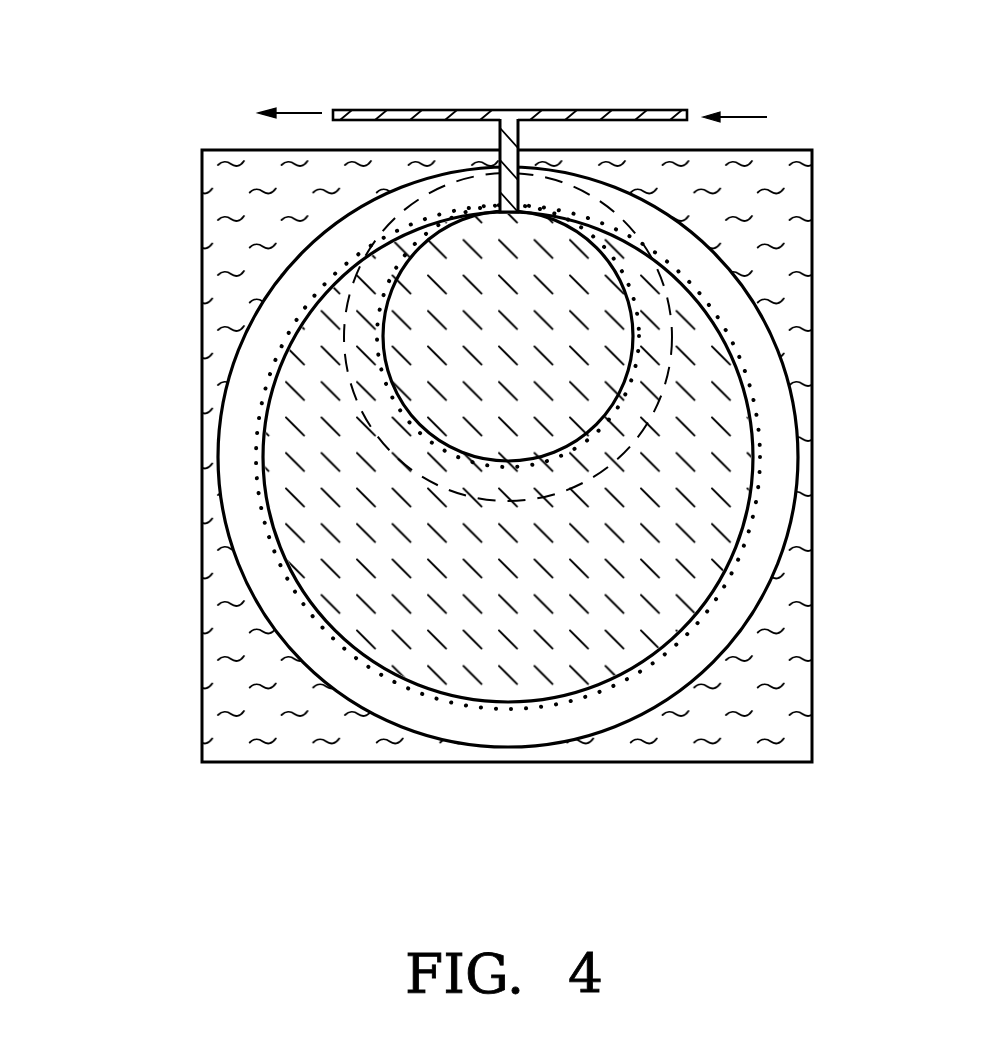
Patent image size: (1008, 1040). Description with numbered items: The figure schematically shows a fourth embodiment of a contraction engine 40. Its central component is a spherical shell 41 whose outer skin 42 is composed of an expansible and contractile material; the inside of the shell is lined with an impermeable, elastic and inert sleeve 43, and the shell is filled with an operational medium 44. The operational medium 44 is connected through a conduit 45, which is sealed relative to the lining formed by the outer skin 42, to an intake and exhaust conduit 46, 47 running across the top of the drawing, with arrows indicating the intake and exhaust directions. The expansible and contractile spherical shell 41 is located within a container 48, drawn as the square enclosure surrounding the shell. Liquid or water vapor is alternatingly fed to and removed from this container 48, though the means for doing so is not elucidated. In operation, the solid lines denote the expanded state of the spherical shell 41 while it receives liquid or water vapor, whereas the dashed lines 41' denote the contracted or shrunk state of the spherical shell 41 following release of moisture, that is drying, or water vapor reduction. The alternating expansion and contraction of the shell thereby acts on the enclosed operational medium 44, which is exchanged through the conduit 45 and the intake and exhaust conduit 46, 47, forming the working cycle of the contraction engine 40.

The contraction engine 40 is at (123, 608).
The spherical shell 41 is at (508, 503).
The contracted state of the spherical shell 41' is at (628, 337).
The outer skin 42 is at (385, 708).
The sleeve 43 is at (440, 690).
The operational medium 44 is at (500, 687).
The conduit 45 is at (520, 187).
The intake conduit 46 is at (602, 110).
The exhaust conduit 47 is at (423, 110).
The container 48 is at (812, 668).